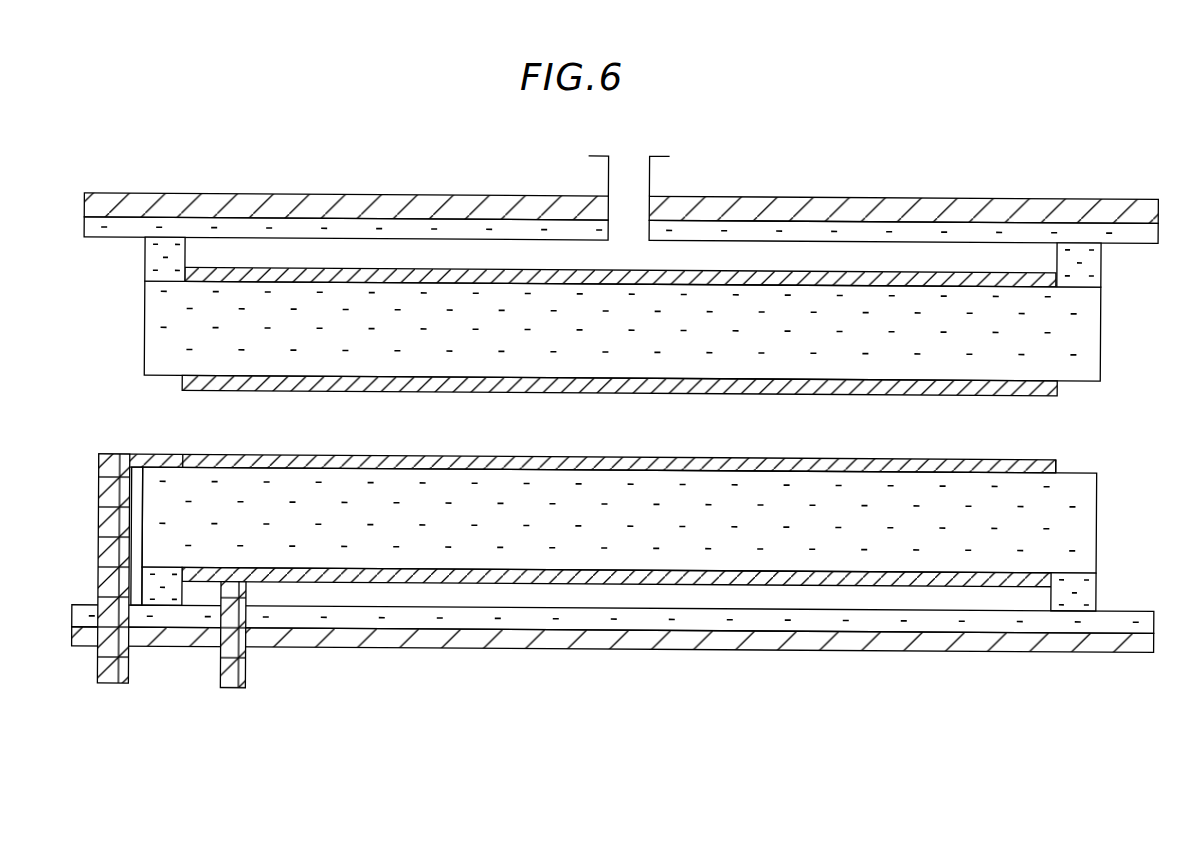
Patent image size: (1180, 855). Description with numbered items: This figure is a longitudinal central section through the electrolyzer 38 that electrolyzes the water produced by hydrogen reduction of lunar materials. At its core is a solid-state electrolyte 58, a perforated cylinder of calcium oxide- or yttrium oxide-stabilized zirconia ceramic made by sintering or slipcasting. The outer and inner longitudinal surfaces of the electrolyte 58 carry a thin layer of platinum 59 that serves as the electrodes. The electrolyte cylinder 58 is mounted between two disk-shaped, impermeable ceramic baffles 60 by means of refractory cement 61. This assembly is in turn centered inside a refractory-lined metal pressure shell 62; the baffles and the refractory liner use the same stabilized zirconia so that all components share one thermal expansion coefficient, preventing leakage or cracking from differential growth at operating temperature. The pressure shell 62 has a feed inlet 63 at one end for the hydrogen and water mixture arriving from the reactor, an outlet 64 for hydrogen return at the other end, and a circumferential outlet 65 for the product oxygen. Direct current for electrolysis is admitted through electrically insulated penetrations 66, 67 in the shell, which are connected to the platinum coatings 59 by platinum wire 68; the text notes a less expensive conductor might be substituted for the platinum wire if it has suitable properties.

The electrolyzer 38 is at (460, 172).
The solid-state electrolyte 58 is at (437, 361).
The thin layer of platinum 59 is at (802, 275).
The disk-shaped impermeable ceramic baffles 60 is at (144, 269).
The refractory cement 61 is at (84, 233).
The refractory-lined metal pressure shell 62 is at (593, 178).
The feed inlet 63 is at (130, 435).
The outlet for H2 return 64 is at (1048, 430).
The circumferential outlet 65 is at (648, 173).
The electrically insulated penetration 66 is at (96, 636).
The electrically insulated penetration 67 is at (218, 637).
The platinum wire 68 is at (126, 666).